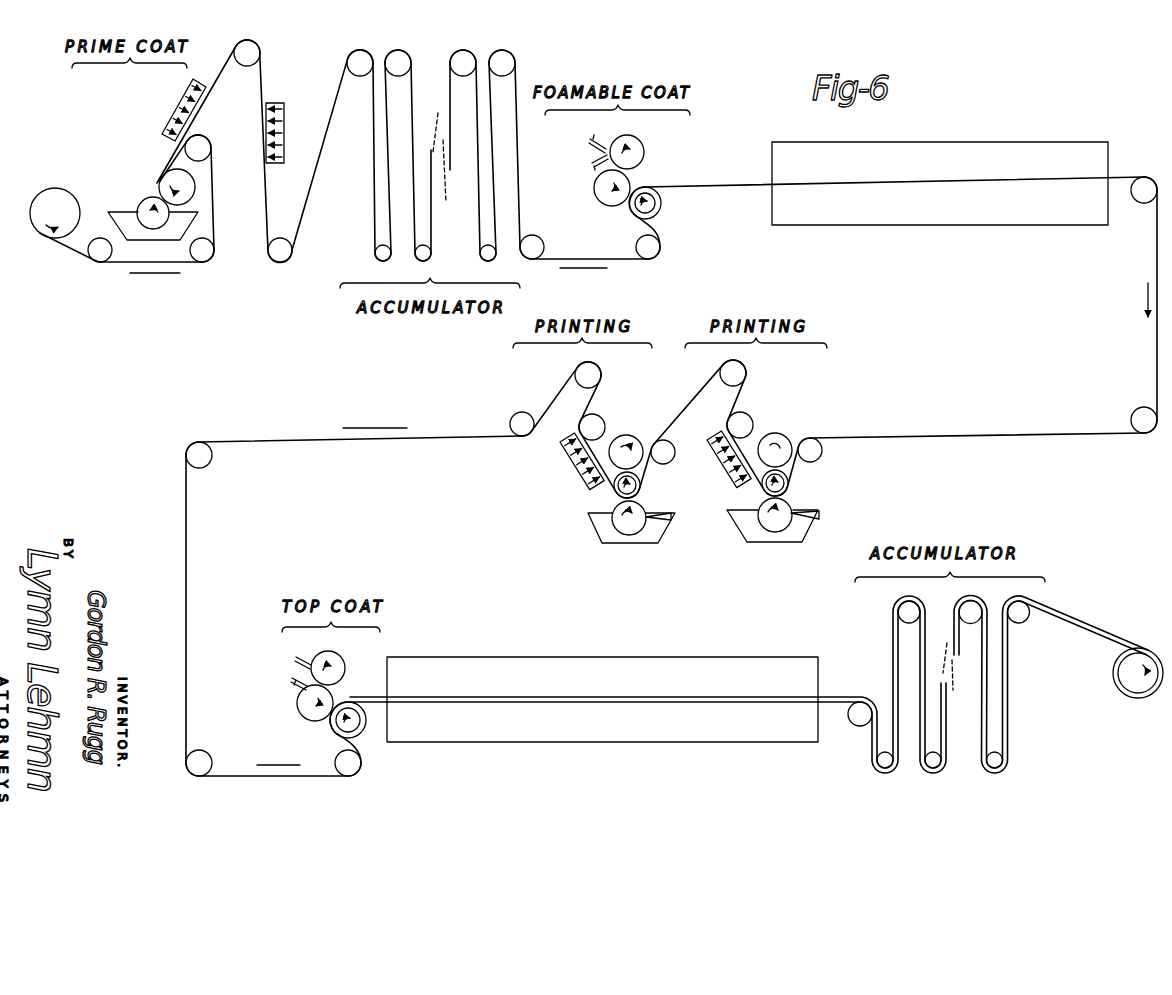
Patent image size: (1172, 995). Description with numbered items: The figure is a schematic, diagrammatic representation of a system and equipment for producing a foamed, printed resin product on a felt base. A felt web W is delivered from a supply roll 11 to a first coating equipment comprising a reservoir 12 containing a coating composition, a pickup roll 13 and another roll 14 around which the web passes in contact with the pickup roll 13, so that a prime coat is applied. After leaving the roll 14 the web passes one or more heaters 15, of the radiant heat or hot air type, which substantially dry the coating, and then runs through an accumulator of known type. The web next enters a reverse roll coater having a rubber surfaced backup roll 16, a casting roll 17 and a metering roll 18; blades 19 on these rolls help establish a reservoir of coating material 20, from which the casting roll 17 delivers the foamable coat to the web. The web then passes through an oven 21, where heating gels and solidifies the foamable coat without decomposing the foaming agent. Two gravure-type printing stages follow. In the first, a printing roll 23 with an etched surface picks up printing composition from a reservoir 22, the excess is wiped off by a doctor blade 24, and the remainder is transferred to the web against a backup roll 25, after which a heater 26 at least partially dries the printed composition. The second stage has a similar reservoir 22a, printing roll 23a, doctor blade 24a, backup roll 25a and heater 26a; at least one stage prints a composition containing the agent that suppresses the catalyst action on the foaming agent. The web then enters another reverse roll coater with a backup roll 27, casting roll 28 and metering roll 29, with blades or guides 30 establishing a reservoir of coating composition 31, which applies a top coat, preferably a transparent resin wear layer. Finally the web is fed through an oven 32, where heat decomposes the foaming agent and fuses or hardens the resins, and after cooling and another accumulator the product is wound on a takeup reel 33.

The supply roll 11 is at (71, 188).
The reservoir 12 is at (148, 244).
The pickup roll 13 is at (140, 200).
The roll 14 is at (196, 187).
The heater 15 is at (165, 112).
The backup roll 16 is at (662, 208).
The casting roll 17 is at (603, 211).
The metering roll 18 is at (645, 152).
The blades 19 is at (590, 141).
The reservoir of coating material 20 is at (589, 168).
The oven 21 is at (913, 142).
The reservoir 22 is at (771, 544).
The reservoir 22a is at (614, 544).
The printing roll 23 is at (757, 526).
The printing roll 23a is at (613, 526).
The doctor blade 24 is at (822, 513).
The doctor blade 24a is at (664, 512).
The backup roll 25 is at (760, 493).
The backup roll 25a is at (613, 493).
The heater 26 is at (708, 450).
The heater 26a is at (563, 462).
The backup roll 27 is at (362, 743).
The casting roll 28 is at (307, 717).
The metering roll 29 is at (336, 654).
The blades 30 is at (297, 660).
The reservoir of coating composition 31 is at (296, 688).
The oven 32 is at (595, 657).
The takeup reel 33 is at (1136, 698).
The felt web W is at (716, 187).